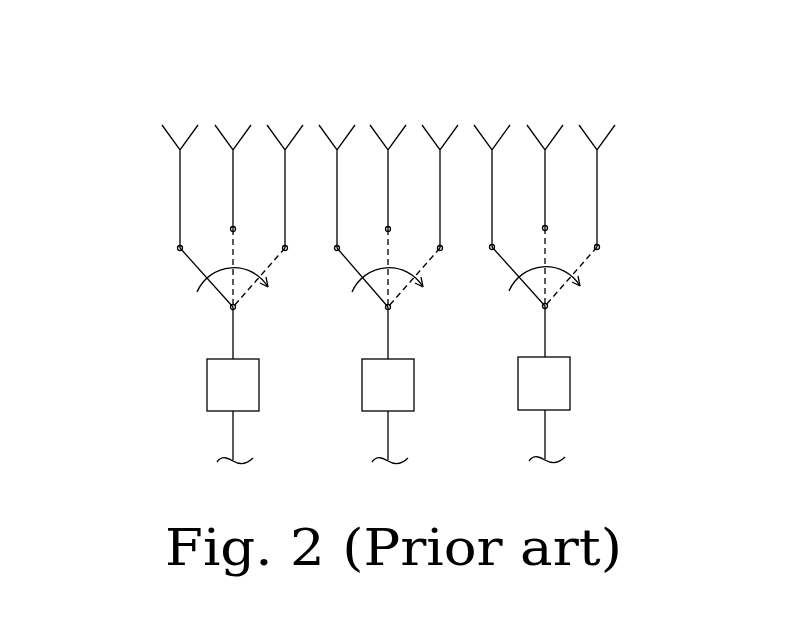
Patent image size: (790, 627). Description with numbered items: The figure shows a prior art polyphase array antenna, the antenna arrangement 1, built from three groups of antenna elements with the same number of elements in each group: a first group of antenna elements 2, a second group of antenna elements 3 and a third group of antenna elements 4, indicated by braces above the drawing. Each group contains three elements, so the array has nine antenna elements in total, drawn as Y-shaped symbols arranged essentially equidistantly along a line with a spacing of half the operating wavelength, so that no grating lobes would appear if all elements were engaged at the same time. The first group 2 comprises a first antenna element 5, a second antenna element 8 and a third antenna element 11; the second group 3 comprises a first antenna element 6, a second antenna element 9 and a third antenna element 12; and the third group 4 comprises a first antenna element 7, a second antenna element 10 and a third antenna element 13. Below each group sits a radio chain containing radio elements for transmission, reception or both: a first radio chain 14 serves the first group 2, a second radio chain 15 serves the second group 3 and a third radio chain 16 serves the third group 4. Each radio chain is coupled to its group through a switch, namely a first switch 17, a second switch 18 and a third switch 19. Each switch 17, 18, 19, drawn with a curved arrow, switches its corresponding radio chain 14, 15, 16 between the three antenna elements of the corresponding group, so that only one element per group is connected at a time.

The antenna arrangement 1 is at (115, 80).
The first group of antenna elements 2 is at (302, 85).
The second group of antenna elements 3 is at (457, 85).
The third group of antenna elements 4 is at (613, 85).
The first antenna element 5 is at (180, 182).
The first antenna element 6 is at (337, 230).
The first antenna element 7 is at (492, 205).
The second antenna element 8 is at (232, 202).
The second antenna element 9 is at (388, 208).
The second antenna element 10 is at (545, 180).
The third antenna element 11 is at (284, 230).
The third antenna element 12 is at (442, 213).
The third antenna element 13 is at (597, 222).
The first radio chain 14 is at (233, 385).
The second radio chain 15 is at (388, 385).
The third radio chain 16 is at (544, 384).
The first switch 17 is at (205, 277).
The second switch 18 is at (368, 287).
The third switch 19 is at (528, 293).